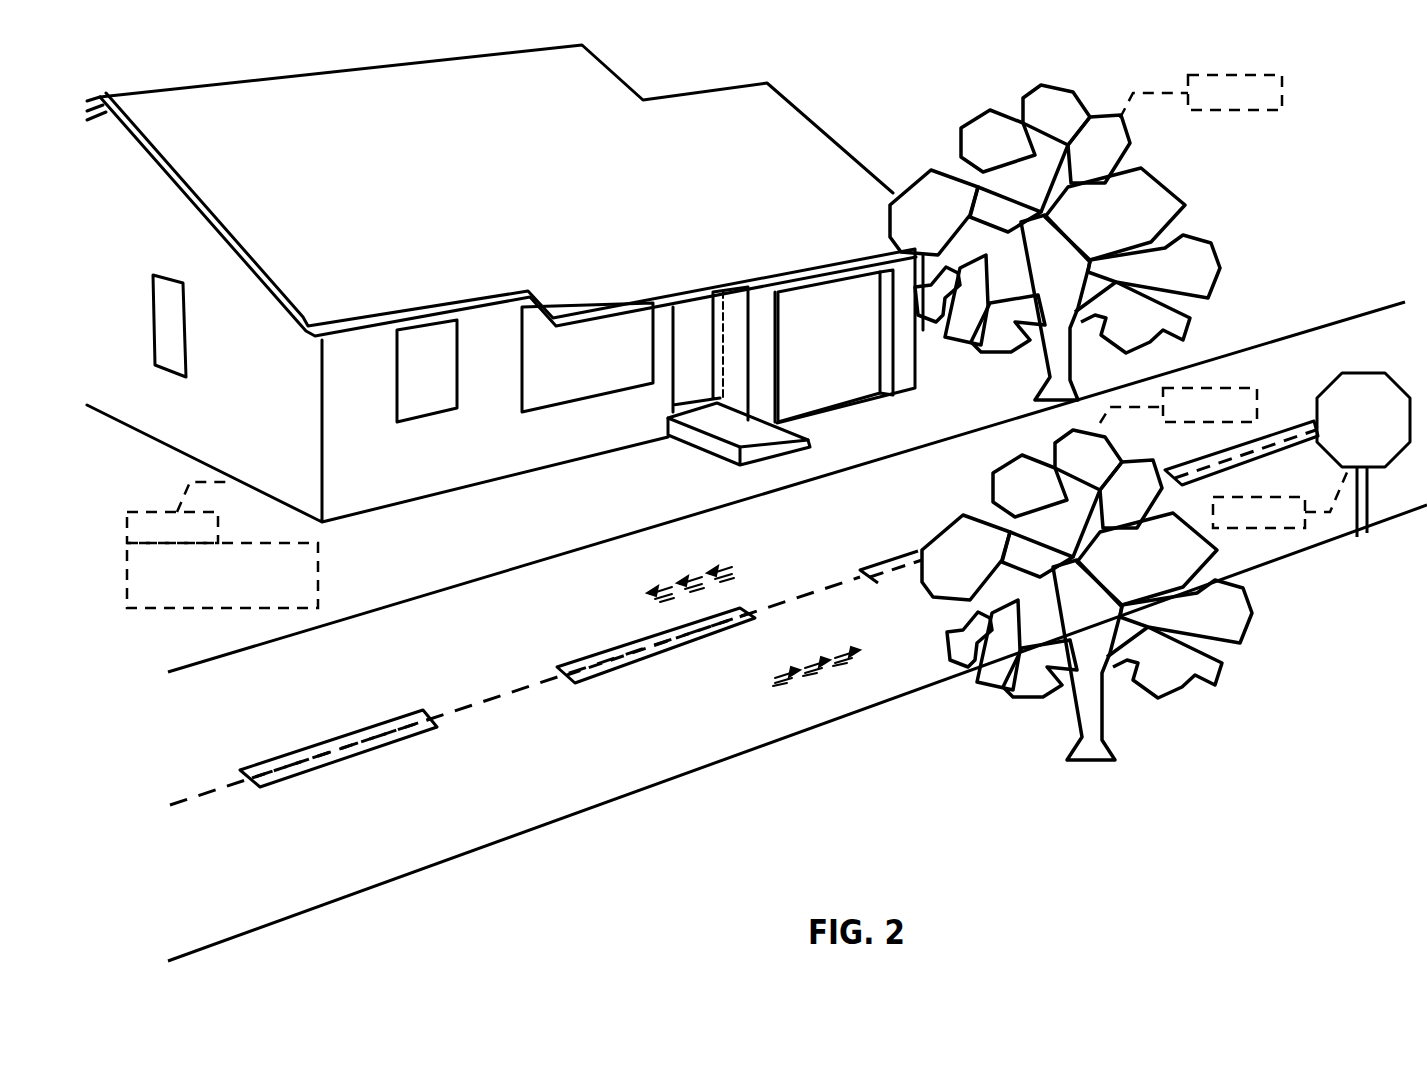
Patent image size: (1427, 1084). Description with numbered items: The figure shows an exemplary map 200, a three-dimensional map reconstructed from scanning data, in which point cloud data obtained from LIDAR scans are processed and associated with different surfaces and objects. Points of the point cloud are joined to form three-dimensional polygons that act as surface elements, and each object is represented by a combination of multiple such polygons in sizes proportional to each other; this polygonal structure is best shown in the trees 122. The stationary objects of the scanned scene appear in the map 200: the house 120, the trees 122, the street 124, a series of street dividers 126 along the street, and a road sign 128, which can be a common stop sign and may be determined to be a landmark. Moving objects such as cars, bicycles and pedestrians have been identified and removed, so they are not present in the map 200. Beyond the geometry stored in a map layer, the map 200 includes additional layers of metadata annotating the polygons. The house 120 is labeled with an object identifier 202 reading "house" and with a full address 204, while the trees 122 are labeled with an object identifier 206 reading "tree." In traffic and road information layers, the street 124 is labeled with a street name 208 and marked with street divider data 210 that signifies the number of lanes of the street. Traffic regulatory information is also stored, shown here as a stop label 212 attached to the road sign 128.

The house 120 is at (546, 217).
The trees 122 is at (1212, 291).
The street 124 is at (810, 567).
The series of street dividers 126 is at (683, 647).
The road sign 128 is at (1326, 394).
The map 200 is at (1211, 804).
The object identifier 202 is at (218, 527).
The full address 204 is at (318, 562).
The object identifier 206 is at (1282, 92).
The street name 208 is at (522, 629).
The street divider data 210 is at (452, 716).
The label 212 is at (1272, 528).